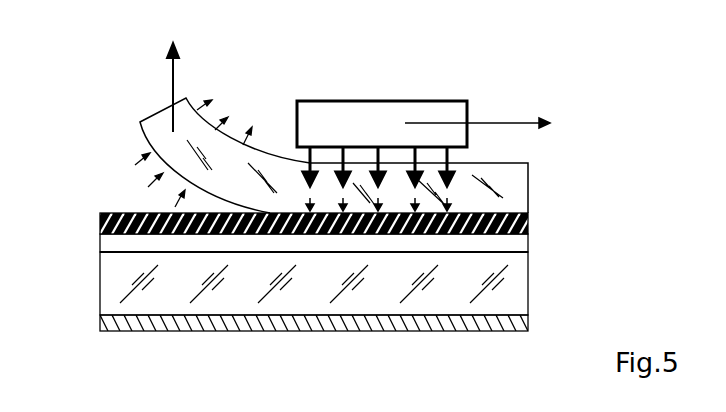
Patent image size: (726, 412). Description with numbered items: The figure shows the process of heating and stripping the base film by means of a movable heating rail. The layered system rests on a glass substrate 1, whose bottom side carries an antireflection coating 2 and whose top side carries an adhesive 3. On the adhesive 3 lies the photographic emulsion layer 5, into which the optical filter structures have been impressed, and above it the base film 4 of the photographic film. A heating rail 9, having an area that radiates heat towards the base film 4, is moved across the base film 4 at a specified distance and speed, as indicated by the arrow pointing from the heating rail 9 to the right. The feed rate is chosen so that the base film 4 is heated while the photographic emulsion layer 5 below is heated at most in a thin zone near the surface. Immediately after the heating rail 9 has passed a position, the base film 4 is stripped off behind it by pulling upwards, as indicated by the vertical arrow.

The substrate 1 is at (113, 287).
The antireflection coating 2 is at (525, 322).
The adhesive 3 is at (525, 245).
The base film 4 is at (523, 198).
The photographic emulsion layer 5 is at (100, 223).
The heating rail 9 is at (432, 107).